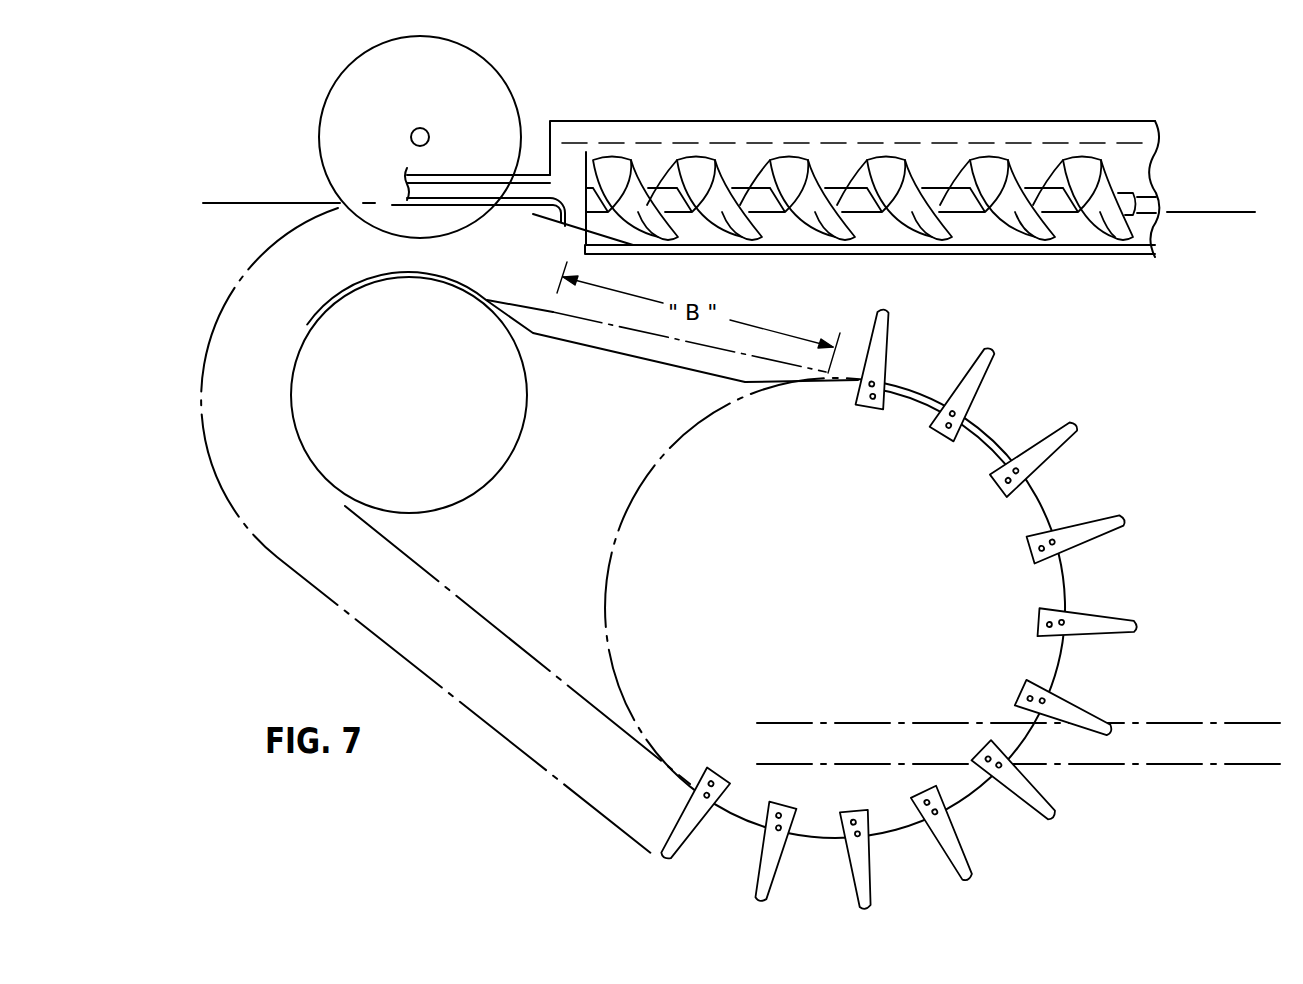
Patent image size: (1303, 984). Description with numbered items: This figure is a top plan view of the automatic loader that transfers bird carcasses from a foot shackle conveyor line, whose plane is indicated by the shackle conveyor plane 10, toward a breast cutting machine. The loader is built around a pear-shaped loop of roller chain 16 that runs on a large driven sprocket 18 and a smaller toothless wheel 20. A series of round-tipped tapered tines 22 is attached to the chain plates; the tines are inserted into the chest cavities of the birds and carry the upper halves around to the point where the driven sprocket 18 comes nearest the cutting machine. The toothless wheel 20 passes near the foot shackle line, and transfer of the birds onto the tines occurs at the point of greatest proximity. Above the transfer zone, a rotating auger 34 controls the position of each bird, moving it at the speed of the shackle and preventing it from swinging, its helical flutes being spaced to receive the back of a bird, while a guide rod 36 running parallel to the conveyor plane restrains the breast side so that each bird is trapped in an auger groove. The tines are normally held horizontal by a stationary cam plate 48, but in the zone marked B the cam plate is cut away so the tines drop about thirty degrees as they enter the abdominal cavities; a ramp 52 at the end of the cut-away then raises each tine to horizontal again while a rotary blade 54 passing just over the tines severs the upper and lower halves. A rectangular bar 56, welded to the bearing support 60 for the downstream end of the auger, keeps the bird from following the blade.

The shackle conveyor plane 10 is at (253, 203).
The roller chain 16 is at (497, 614).
The driven sprocket 18 is at (836, 562).
The toothless wheel 20 is at (421, 437).
The tapered tines 22 is at (1122, 518).
The rotating auger 34 is at (985, 160).
The guide rod 36 is at (1067, 263).
The cam plate 48 is at (348, 292).
The ramp 52 is at (518, 316).
The rotary blade 54 is at (413, 104).
The rectangular bar 56 is at (528, 199).
The bearing support 60 is at (570, 155).